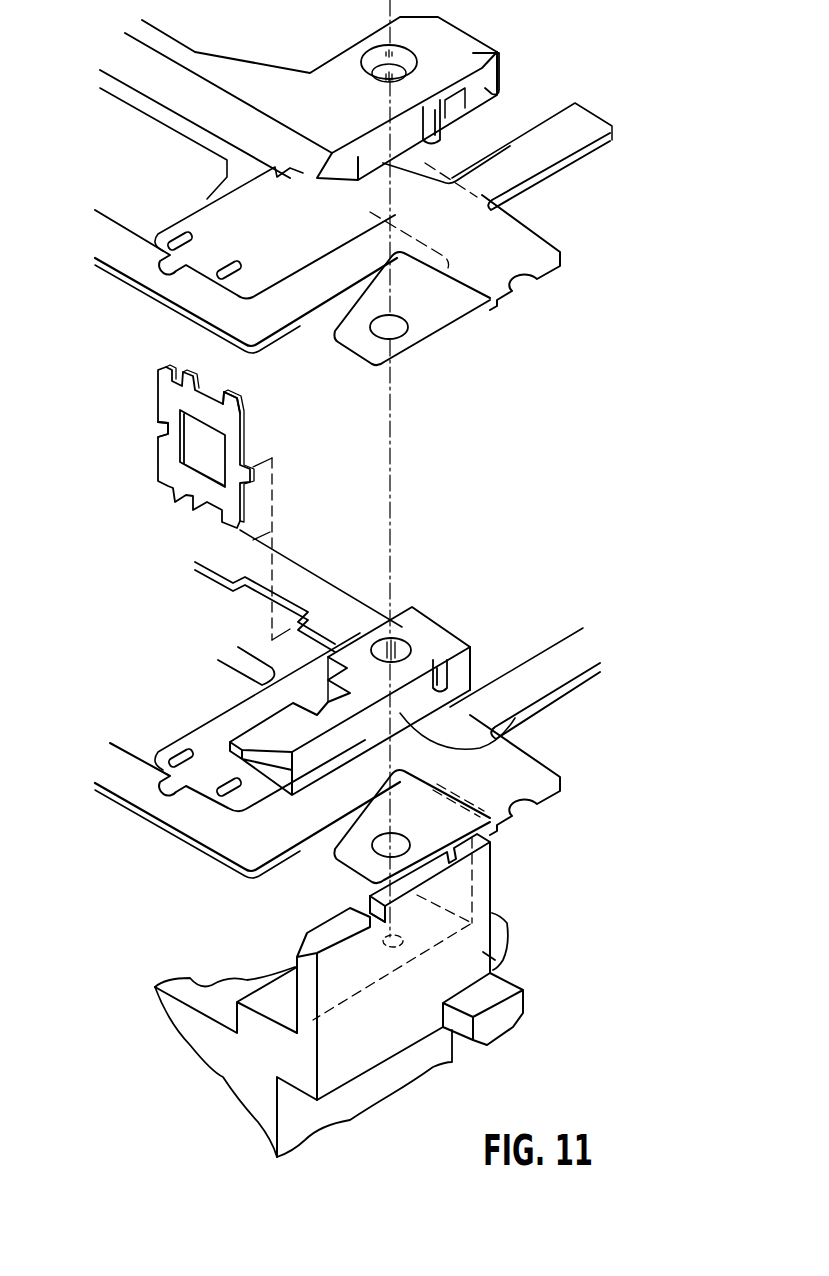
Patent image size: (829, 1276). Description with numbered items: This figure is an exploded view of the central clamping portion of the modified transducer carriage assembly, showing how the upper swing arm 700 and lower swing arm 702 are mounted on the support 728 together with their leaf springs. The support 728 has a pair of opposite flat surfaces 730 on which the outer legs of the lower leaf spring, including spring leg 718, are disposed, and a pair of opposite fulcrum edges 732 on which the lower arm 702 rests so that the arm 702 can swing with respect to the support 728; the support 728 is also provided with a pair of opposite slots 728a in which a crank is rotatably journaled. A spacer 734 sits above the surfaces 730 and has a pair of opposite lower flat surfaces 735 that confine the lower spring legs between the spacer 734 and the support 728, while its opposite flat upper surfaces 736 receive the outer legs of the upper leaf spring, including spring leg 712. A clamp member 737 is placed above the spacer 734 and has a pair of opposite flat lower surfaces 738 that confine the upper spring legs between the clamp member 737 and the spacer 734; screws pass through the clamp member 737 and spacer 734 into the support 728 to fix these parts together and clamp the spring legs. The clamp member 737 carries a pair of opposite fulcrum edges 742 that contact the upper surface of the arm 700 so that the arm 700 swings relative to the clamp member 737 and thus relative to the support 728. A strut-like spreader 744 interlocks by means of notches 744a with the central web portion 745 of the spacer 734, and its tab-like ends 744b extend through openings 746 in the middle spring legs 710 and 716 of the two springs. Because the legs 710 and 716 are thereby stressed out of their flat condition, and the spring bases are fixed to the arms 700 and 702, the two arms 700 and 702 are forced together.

The swing arm 700 is at (133, 288).
The swing arm 702 is at (157, 830).
The spring leg 710 is at (178, 200).
The spring leg 712 is at (452, 318).
The spring leg 716 is at (205, 718).
The spring leg 718 is at (490, 828).
The support 728 is at (481, 986).
The slots 728a is at (360, 902).
The flat surfaces 730 is at (280, 985).
The fulcrum edges 732 is at (501, 914).
The spacer 734 is at (430, 621).
The lower flat surfaces 735 is at (493, 735).
The upper flat surfaces 736 is at (450, 640).
The clamp member 737 is at (500, 62).
The lower flat surfaces 738 is at (383, 170).
The fulcrum edges 742 is at (502, 92).
The spreader 744 is at (157, 466).
The notches 744a is at (166, 431).
The tab-like ends 744b is at (240, 393).
The central web portion 745 is at (325, 573).
The openings 746 is at (226, 262).